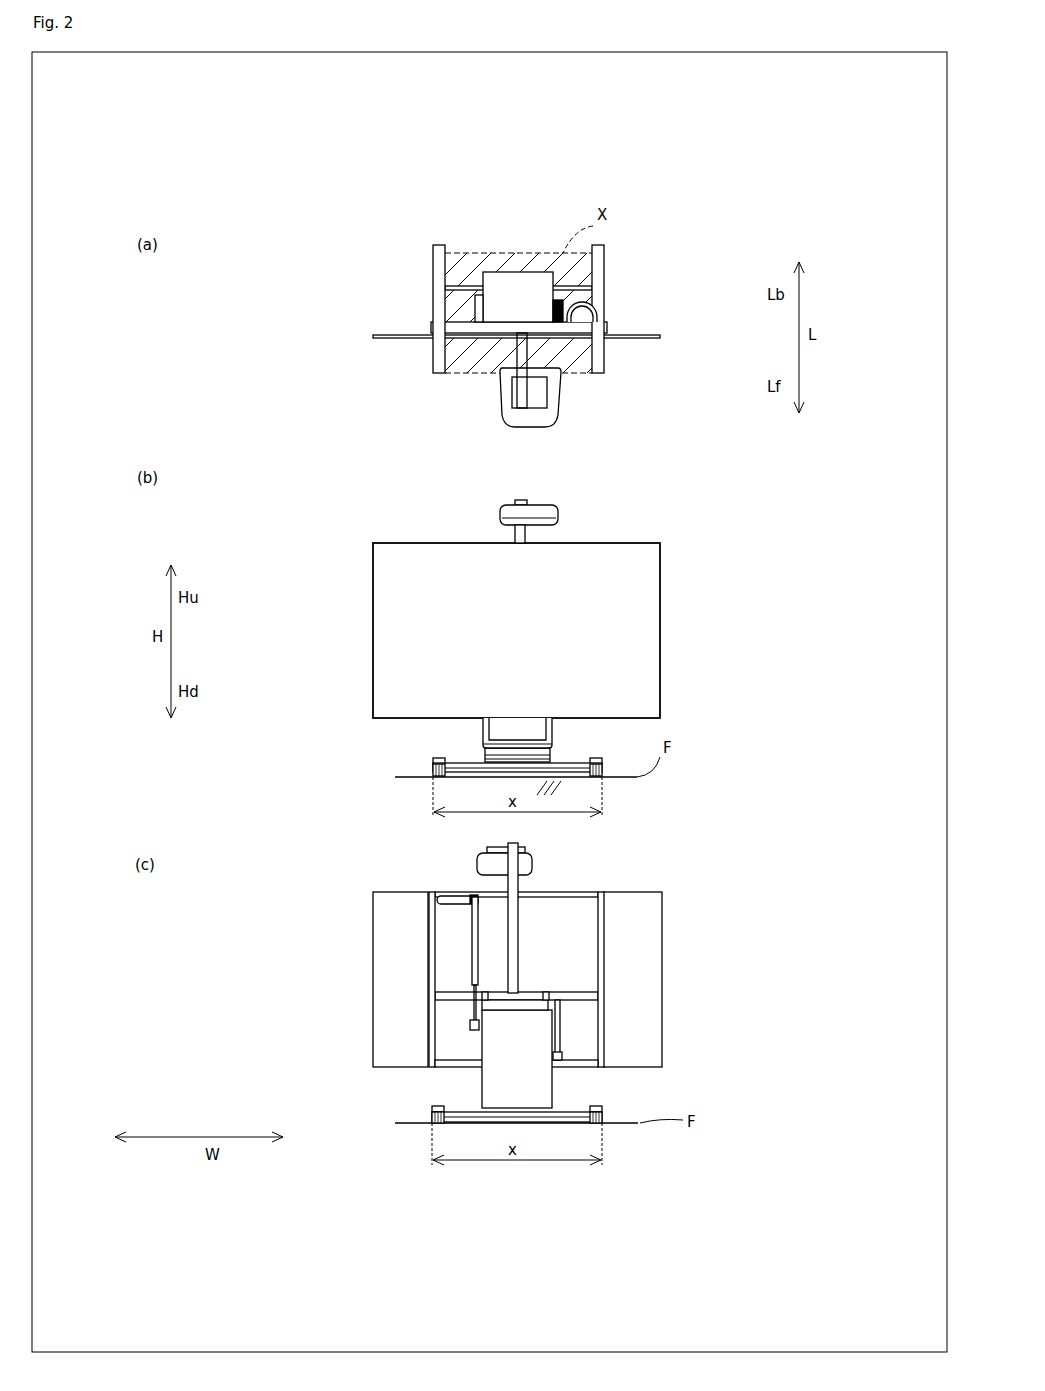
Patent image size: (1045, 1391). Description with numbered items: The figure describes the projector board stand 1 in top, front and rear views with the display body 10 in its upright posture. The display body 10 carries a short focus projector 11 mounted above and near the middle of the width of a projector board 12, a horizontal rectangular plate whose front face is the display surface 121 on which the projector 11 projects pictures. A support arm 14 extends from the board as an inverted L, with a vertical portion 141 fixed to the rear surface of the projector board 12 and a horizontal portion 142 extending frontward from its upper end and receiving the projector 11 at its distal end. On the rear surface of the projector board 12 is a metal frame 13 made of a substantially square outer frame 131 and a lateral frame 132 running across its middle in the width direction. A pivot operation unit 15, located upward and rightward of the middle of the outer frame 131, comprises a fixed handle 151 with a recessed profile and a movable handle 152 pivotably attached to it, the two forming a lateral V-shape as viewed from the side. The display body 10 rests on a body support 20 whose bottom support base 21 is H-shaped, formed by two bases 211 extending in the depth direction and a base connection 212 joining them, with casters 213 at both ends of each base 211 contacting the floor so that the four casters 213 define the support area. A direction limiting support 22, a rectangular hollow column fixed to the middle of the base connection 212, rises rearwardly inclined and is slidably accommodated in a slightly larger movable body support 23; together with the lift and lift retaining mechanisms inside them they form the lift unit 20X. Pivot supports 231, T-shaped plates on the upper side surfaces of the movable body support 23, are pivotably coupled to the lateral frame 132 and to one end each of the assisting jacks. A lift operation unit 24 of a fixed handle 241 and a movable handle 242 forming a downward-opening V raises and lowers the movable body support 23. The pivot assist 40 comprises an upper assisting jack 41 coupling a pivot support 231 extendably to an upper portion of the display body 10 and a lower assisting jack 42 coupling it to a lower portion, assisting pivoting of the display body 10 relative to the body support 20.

The projector board stand 1 is at (539, 640).
The display body 10 is at (416, 343).
The projector 11 is at (486, 663).
The projector board 12 is at (544, 685).
The display surface 121 is at (625, 335).
The frame 13 is at (546, 676).
The outer frame 131 is at (460, 327).
The lateral frame 132 is at (585, 993).
The support arm 14 is at (465, 628).
The vertical portion 141 is at (520, 530).
The horizontal portion 142 is at (505, 380).
The pivot operation unit 15 is at (476, 604).
The fixed handle 151 is at (593, 300).
The movable handle 152 is at (470, 902).
The body support 20 is at (528, 659).
The lift unit 20X is at (498, 280).
The bottom support base 21 is at (487, 687).
The bases 211 is at (437, 266).
The base connection 212 is at (460, 308).
The casters 213 is at (433, 772).
The direction limiting support 22 is at (560, 757).
The movable body support 23 is at (512, 887).
The pivot supports 231 is at (488, 995).
The lift operation unit 24 is at (475, 739).
The fixed handle 241 is at (500, 745).
The movable handle 242 is at (495, 757).
The pivot assist 40 is at (513, 978).
The upper assisting jack 41 is at (472, 960).
The lower assisting jack 42 is at (558, 1030).